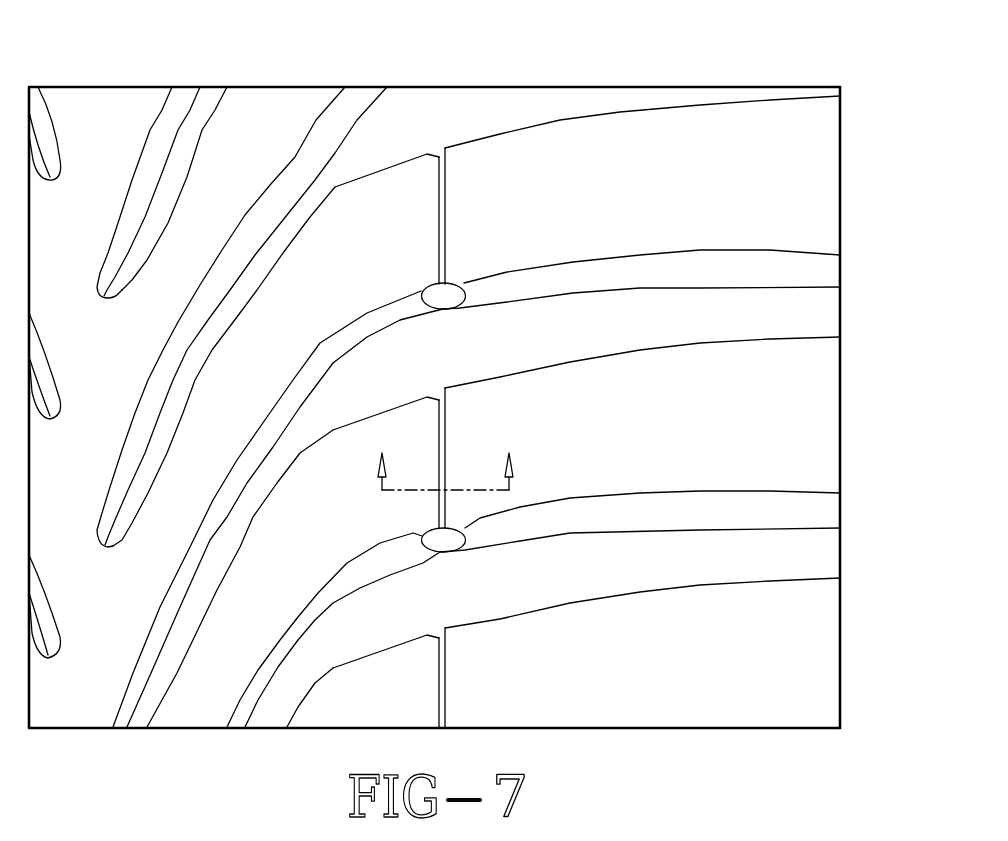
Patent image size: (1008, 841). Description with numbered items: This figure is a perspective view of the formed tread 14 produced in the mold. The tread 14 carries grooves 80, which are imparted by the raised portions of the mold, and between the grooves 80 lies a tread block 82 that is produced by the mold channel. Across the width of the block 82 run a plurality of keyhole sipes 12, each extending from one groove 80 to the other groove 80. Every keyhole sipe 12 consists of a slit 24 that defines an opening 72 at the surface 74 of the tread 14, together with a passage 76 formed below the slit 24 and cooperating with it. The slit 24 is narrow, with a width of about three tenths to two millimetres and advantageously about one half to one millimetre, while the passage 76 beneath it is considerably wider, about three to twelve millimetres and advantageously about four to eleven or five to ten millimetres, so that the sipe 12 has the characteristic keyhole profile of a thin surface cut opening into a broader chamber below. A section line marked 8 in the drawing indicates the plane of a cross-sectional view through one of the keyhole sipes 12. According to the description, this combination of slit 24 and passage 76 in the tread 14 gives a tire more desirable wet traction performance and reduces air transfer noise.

The formed tread 14 is at (745, 152).
The tread block 82 is at (787, 200).
The groove 80 is at (365, 157).
The keyhole sipe 12 is at (437, 238).
The slit 24 is at (445, 148).
The opening 72 is at (455, 193).
The surface 74 is at (690, 208).
The passage 76 is at (438, 311).
The section line 8- 8 is at (446, 456).